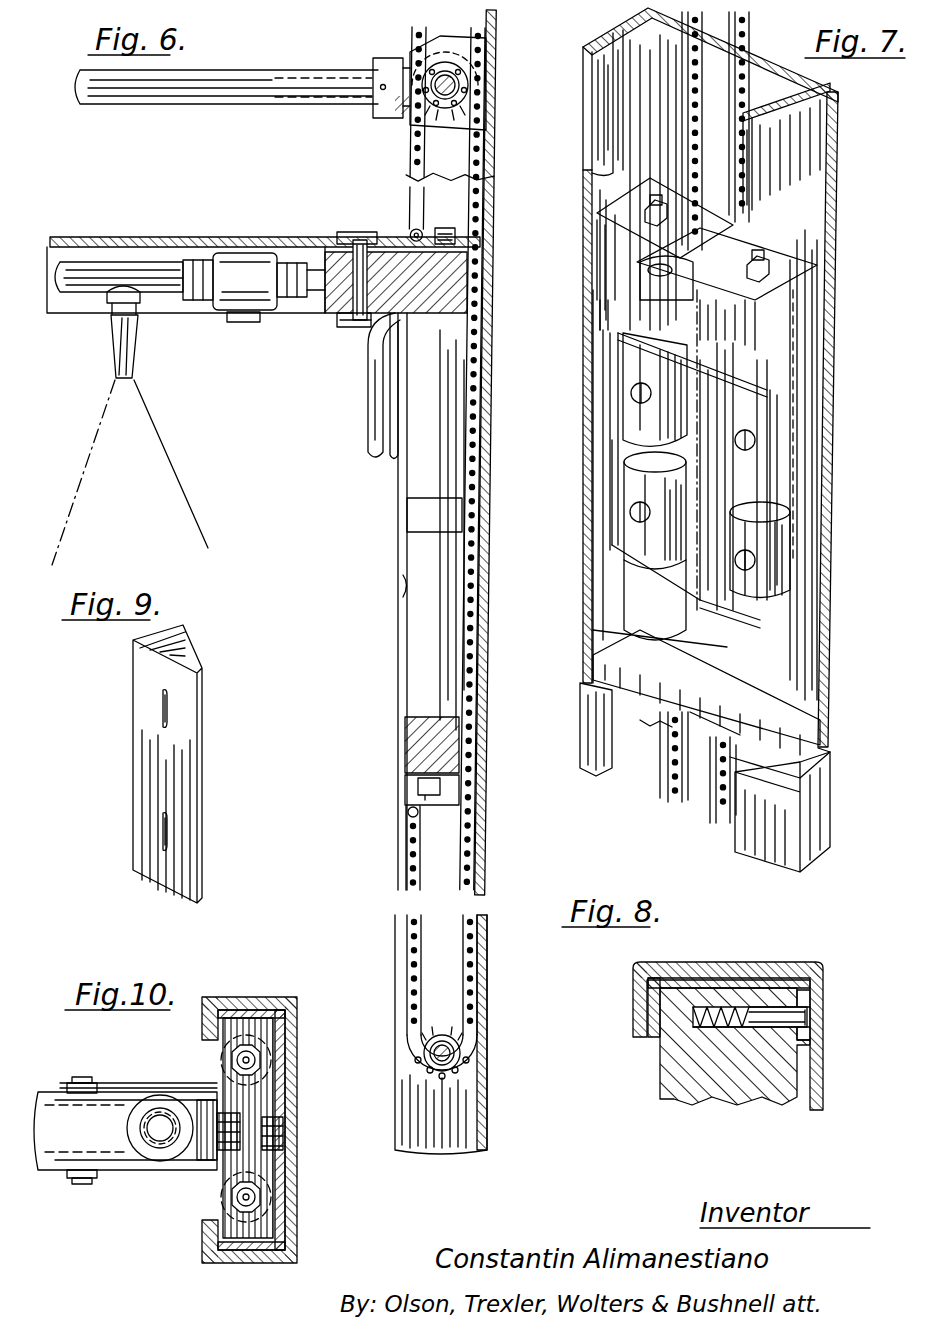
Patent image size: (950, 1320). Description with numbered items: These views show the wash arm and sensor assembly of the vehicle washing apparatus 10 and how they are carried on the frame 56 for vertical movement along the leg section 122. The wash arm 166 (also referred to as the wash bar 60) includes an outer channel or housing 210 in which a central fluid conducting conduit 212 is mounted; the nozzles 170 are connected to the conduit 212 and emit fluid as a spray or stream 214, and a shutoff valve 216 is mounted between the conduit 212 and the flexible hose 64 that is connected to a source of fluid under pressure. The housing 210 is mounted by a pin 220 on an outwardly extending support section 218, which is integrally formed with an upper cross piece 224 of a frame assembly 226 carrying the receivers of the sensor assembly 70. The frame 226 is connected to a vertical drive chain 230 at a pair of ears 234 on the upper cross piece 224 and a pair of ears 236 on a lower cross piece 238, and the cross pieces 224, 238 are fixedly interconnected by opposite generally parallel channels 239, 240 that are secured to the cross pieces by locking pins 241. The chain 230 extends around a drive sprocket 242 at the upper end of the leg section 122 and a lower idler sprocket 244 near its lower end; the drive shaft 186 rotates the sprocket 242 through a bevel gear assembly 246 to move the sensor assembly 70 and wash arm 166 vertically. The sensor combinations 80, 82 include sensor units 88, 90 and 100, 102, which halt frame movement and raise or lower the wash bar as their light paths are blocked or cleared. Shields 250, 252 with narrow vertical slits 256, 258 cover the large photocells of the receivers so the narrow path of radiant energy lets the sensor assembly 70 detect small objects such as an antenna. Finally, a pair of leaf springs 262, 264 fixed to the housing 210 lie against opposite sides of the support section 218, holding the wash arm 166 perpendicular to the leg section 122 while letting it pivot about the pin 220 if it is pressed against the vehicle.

In FIG. 6, the cargo handling apparatus 10 is at (548, 185).
In FIG. 6, the frame 56 is at (503, 97).
In FIG. 7, the frame 56 is at (843, 132).
In FIG. 6, the wash bar 60 is at (140, 232).
In FIG. 6, the flexible conduit or hose 64 is at (377, 436).
In FIG. 6, the sensor assembly 70 is at (362, 600).
In FIG. 7, the sensor assembly 70 is at (855, 275).
In FIG. 7, the sensor combination 80 is at (614, 438).
In FIG. 7, the sensor combination 82 is at (792, 495).
In FIG. 6, the sensor unit 88 is at (420, 385).
In FIG. 7, the sensor unit 88 is at (600, 323).
In FIG. 10, the sensor unit 88 is at (262, 1060).
In FIG. 6, the sensor unit 90 is at (422, 660).
In FIG. 7, the sensor unit 90 is at (648, 593).
In FIG. 7, the upper sensor unit 100 is at (745, 350).
In FIG. 10, the upper sensor unit 100 is at (220, 1265).
In FIG. 7, the sensor unit 102 is at (733, 640).
In FIG. 6, the leg section 122 is at (450, 1112).
In FIG. 7, the leg section 122 is at (800, 815).
In FIG. 8, the leg section 122 is at (692, 960).
In FIG. 10, the leg section 122 is at (292, 1243).
In FIG. 6, the wash arm 166 is at (220, 233).
In FIG. 10, the wash arm 166 is at (95, 1222).
In FIG. 6, the nozzles 170 is at (113, 337).
In FIG. 6, the drive shaft 186 is at (240, 74).
In FIG. 6, the outer channel or housing 210 is at (108, 238).
In FIG. 10, the outer channel or housing 210 is at (42, 1110).
In FIG. 6, the central fluid conducting conduit 212 is at (182, 288).
In FIG. 6, the spray or stream 214 is at (160, 440).
In FIG. 6, the shutoff valve 216 is at (243, 322).
In FIG. 6, the support section 218 is at (393, 235).
In FIG. 7, the support section 218 is at (640, 290).
In FIG. 10, the support section 218 is at (195, 1170).
In FIG. 6, the pin 220 is at (360, 240).
In FIG. 10, the pin 220 is at (160, 1150).
In FIG. 6, the cross piece 224 is at (466, 293).
In FIG. 7, the cross piece 224 is at (600, 245).
In FIG. 8, the cross piece 224 is at (775, 1077).
In FIG. 10, the cross piece 224 is at (262, 1105).
In FIG. 6, the frame assembly 226 is at (404, 515).
In FIG. 7, the frame assembly 226 is at (598, 388).
In FIG. 6, the vertical drive chain 230 is at (472, 802).
In FIG. 7, the vertical drive chain 230 is at (695, 65).
In FIG. 10, the vertical drive chain 230 is at (290, 1148).
In FIG. 6, the ears 234 is at (486, 224).
In FIG. 7, the ears 234 is at (782, 215).
In FIG. 6, the ears 236 is at (410, 805).
In FIG. 7, the ears 236 is at (660, 735).
In FIG. 6, the lower cross piece 238 is at (422, 738).
In FIG. 7, the lower cross piece 238 is at (630, 668).
In FIG. 7, the channel 239 is at (600, 538).
In FIG. 8, the channel 239 is at (752, 982).
In FIG. 10, the channel 239 is at (262, 1003).
In FIG. 7, the channel 240 is at (757, 590).
In FIG. 10, the channel 240 is at (265, 1265).
In FIG. 8, the locking pins 241 is at (810, 1017).
In FIG. 6, the drive sprocket 242 is at (412, 124).
In FIG. 6, the lower idler sprocket 244 is at (468, 1060).
In FIG. 6, the bevel gear assembly 246 is at (385, 55).
In FIG. 7, the shield 250 is at (630, 492).
In FIG. 9, the shield 250 is at (147, 780).
In FIG. 7, the shield 252 is at (750, 530).
In FIG. 9, the slit or aperture 256 is at (162, 712).
In FIG. 9, the slit or aperture 258 is at (180, 848).
In FIG. 10, the leaf spring 262 is at (120, 1090).
In FIG. 10, the leaf spring 264 is at (100, 1172).